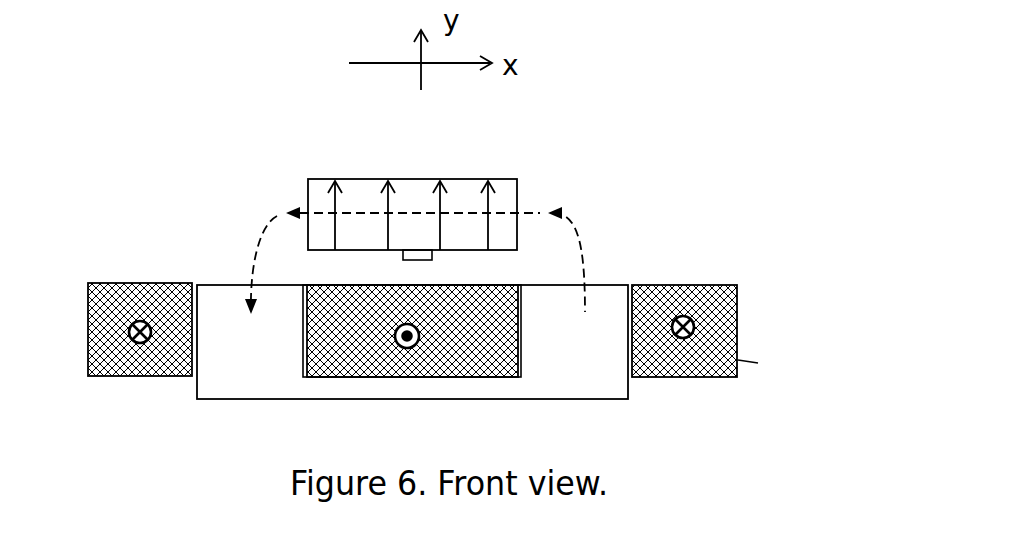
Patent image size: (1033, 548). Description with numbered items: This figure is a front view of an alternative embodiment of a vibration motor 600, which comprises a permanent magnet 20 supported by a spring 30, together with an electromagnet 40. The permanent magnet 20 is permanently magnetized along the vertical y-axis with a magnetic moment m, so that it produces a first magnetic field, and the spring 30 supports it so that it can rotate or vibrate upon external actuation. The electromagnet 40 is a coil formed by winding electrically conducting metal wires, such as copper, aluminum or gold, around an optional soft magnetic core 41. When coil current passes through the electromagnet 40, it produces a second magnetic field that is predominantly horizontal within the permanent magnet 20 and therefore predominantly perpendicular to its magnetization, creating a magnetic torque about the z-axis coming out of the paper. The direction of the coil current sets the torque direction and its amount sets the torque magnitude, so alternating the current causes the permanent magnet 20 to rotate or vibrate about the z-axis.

The vibration motor 600 is at (479, 237).
The permanent magnet 20 is at (485, 205).
The spring 30 is at (481, 268).
The electromagnet 40 is at (479, 346).
The soft magnetic core 41 is at (449, 366).